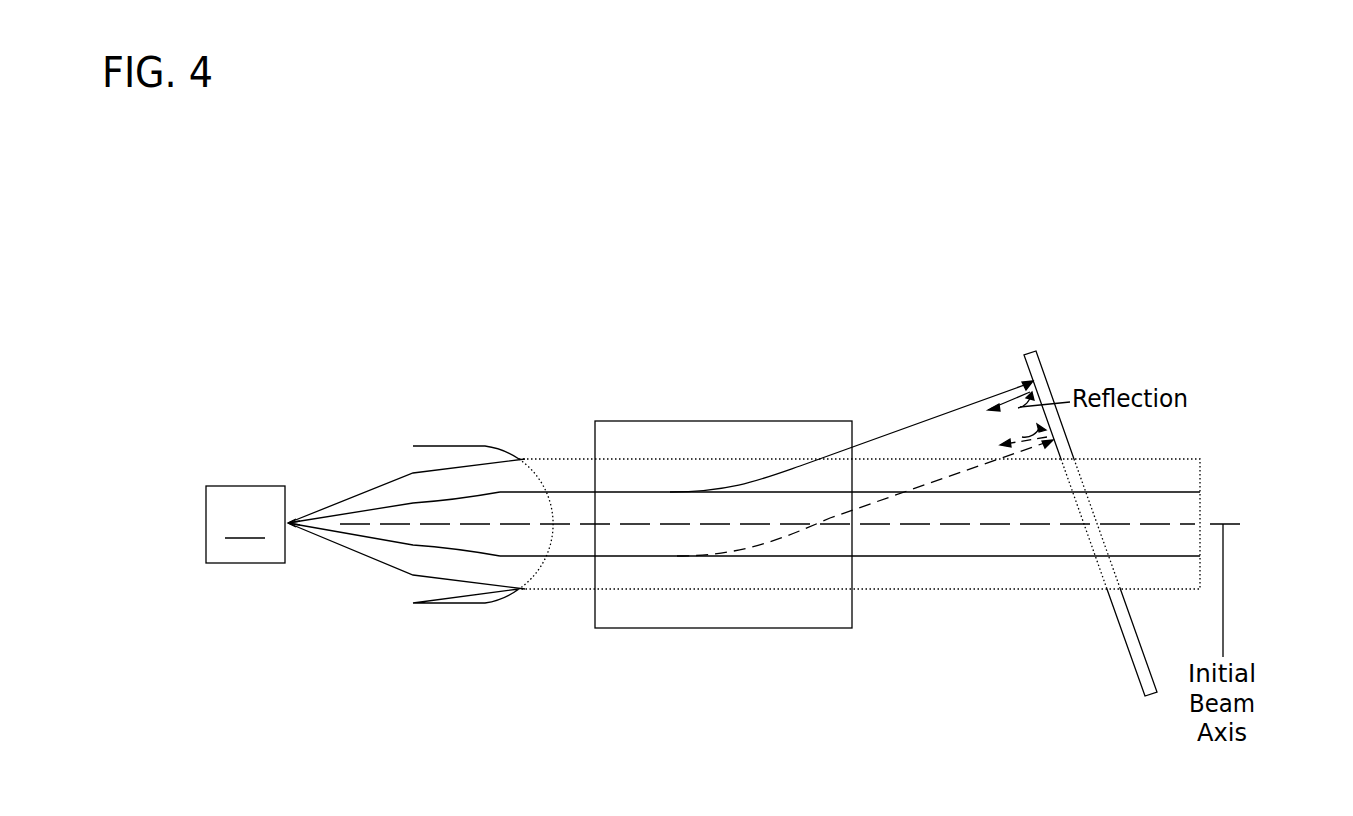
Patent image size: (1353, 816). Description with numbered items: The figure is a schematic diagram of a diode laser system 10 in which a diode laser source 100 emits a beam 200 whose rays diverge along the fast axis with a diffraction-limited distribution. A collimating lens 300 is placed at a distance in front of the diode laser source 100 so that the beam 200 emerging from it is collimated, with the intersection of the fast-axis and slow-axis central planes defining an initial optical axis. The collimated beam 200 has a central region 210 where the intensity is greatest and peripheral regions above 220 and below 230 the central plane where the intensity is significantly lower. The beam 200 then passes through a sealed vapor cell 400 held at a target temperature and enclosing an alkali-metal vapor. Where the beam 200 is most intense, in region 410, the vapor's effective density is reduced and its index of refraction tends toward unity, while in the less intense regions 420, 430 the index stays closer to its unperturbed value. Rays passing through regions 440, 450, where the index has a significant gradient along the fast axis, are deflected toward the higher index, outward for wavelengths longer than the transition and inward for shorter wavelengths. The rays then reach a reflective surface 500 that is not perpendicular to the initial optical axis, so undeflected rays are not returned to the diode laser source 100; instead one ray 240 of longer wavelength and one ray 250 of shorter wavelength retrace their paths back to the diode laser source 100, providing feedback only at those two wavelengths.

The diode laser system 10 is at (435, 190).
The diode laser source 100 is at (253, 524).
The beam 200 is at (333, 462).
The central region 210 is at (1183, 505).
The peripheral region above 220 is at (1170, 466).
The peripheral region below 230 is at (1170, 582).
The ray 240 is at (975, 402).
The ray 250 is at (978, 465).
The collimating lens 300 is at (460, 446).
The vapor cell 400 is at (723, 421).
The region 410 is at (668, 524).
The region 420 is at (633, 477).
The region 430 is at (633, 575).
The region 440 is at (618, 492).
The region 450 is at (618, 556).
The reflective surface 500 is at (1028, 353).